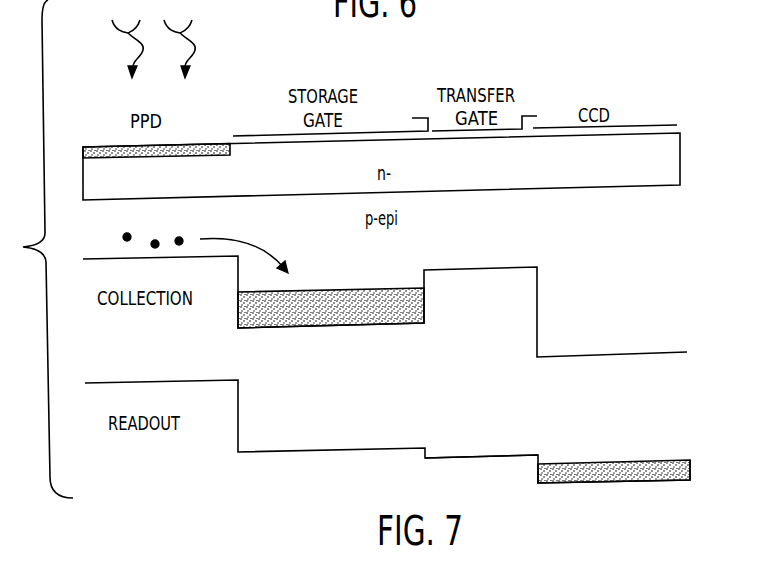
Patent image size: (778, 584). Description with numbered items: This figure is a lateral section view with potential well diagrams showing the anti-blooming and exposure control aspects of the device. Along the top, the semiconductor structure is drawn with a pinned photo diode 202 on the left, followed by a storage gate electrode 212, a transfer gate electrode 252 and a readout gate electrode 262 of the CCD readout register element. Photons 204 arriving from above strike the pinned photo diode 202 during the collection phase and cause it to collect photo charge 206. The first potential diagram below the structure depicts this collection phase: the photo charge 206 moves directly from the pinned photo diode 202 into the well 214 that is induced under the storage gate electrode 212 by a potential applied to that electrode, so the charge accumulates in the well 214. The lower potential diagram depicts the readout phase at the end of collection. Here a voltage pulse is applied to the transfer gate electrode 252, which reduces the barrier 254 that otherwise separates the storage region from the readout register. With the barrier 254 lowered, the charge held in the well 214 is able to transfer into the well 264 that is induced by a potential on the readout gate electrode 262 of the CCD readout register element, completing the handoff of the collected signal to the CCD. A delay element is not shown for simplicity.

The pinned photo diode 202 is at (103, 145).
The photons 204 is at (148, 39).
The photo charge 206 is at (127, 237).
The storage gate electrode 212 is at (252, 135).
The well 214 is at (373, 280).
The transfer gate electrode 252 is at (442, 131).
The barrier 254 is at (473, 455).
The readout gate electrode 262 is at (570, 129).
The well 264 is at (565, 465).